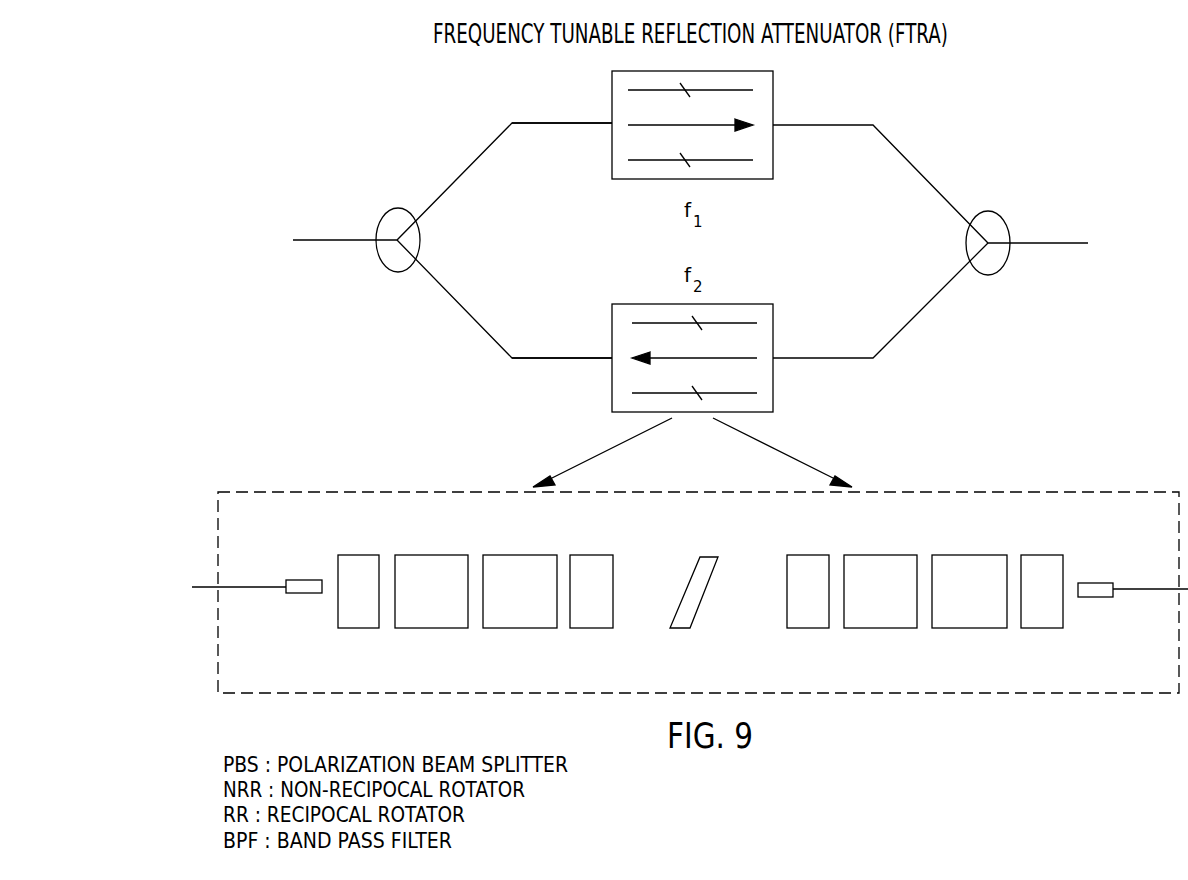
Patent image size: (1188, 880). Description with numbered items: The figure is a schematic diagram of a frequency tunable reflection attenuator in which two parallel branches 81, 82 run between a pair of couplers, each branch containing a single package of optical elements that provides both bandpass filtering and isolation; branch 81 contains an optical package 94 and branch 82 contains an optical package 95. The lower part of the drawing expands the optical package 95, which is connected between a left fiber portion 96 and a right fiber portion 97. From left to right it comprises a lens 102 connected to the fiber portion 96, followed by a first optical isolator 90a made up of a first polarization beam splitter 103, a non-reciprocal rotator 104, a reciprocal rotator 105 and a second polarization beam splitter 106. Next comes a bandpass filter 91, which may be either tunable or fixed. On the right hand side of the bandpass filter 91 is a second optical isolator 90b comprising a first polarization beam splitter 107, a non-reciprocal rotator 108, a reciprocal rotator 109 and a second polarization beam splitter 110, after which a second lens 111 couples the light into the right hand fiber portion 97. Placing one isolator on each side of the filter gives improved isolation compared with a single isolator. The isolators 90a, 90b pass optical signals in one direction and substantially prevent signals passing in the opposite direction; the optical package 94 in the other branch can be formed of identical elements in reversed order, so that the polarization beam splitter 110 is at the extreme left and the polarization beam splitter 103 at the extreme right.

The branch 81 is at (548, 123).
The branch 82 is at (568, 358).
The optical package 94 is at (773, 88).
The optical package 95 is at (773, 395).
The left fiber portion 96 is at (234, 586).
The right fiber portion 97 is at (1163, 587).
The lens 102 is at (302, 594).
The second lens 111 is at (1098, 598).
The first optical isolator 90a is at (478, 570).
The second optical isolator 90b is at (925, 570).
The first polarization beam splitter 103 is at (375, 612).
The non-reciprocal rotator 104 is at (448, 612).
The reciprocal rotator 105 is at (537, 612).
The second polarization beam splitter 106 is at (591, 591).
The first PBS 107 is at (825, 612).
The NRR 108 is at (897, 612).
The RR 109 is at (987, 612).
The second PBS 110 is at (1042, 591).
The bandpass filter 91 is at (680, 630).